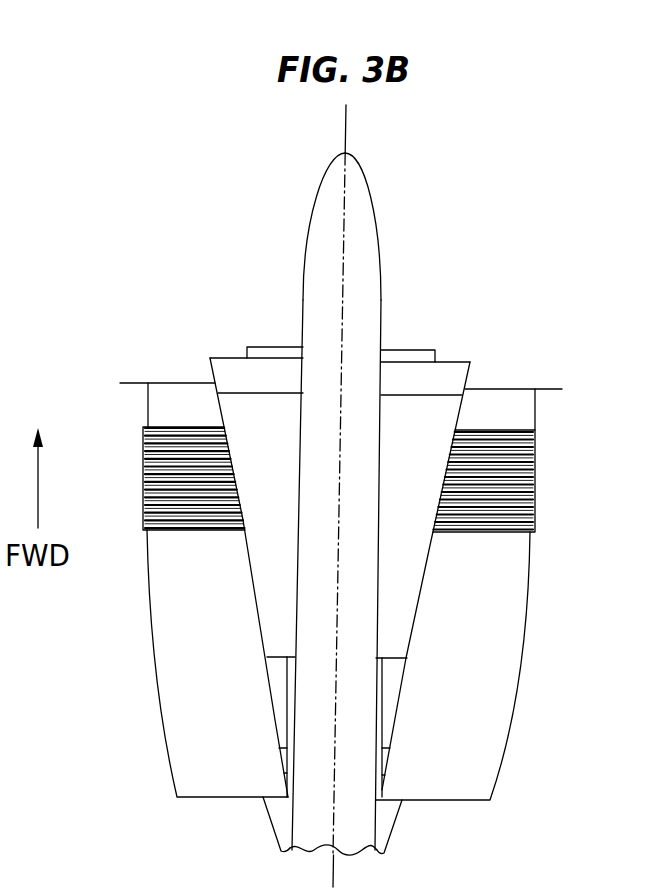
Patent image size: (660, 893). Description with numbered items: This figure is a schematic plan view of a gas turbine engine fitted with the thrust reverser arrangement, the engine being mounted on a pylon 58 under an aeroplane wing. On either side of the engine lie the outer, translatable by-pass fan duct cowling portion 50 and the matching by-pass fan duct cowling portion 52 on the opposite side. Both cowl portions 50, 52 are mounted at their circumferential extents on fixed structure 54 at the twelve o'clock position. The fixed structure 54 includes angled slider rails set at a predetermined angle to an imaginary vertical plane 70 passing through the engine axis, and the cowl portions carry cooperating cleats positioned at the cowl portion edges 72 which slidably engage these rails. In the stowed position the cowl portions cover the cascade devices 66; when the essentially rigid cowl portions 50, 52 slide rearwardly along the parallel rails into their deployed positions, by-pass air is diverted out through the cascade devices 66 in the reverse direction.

The translatable by-pass fan duct cowling portion 50 is at (517, 668).
The matching by-pass fan duct cowling portion 52 is at (156, 672).
The fixed structure 54 is at (252, 410).
The pylon 58 is at (382, 227).
The cascade devices 66 is at (143, 453).
The imaginary vertical plane 70 is at (346, 132).
The cowl portion edge 72 is at (248, 552).